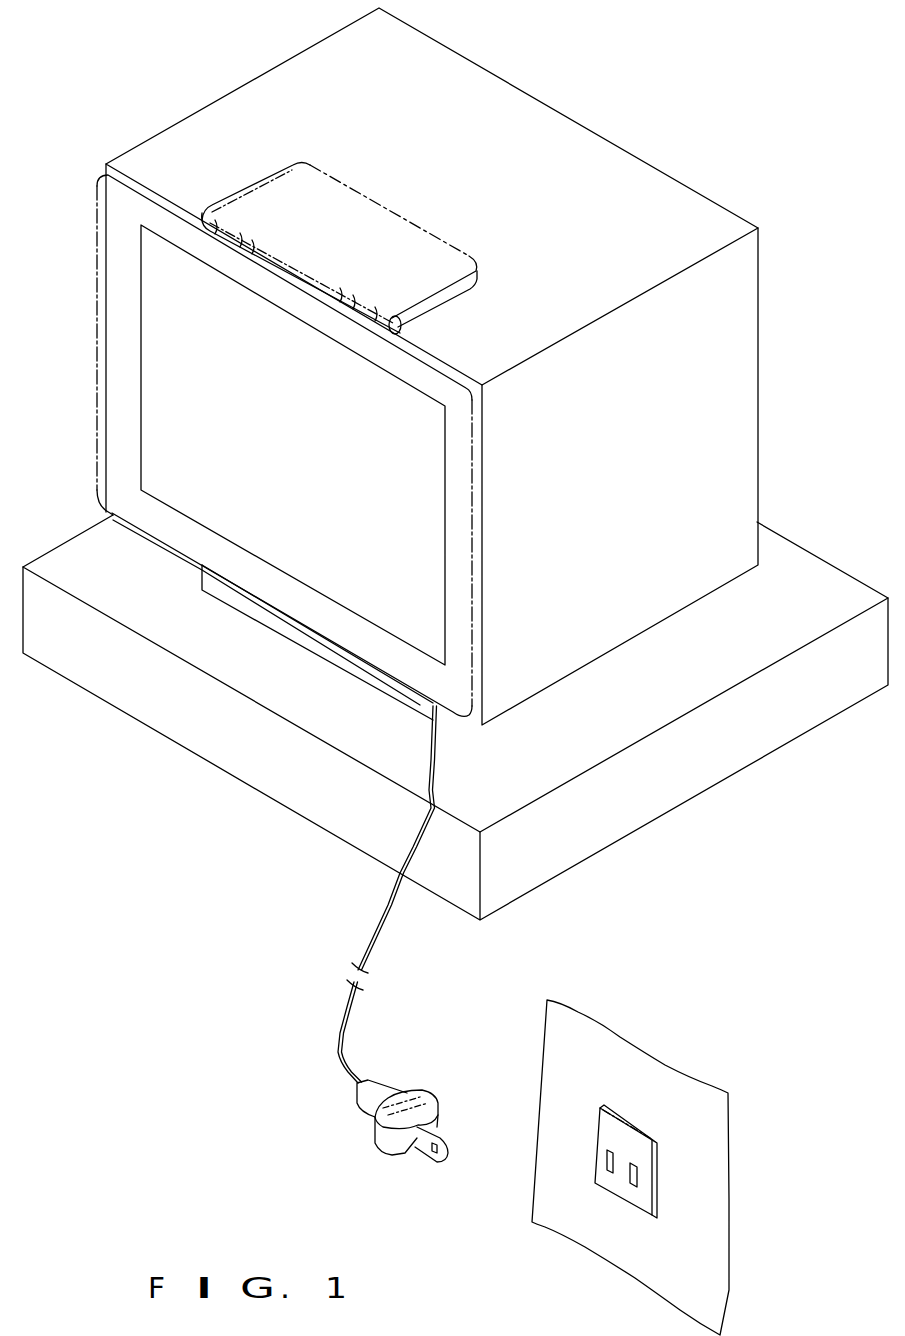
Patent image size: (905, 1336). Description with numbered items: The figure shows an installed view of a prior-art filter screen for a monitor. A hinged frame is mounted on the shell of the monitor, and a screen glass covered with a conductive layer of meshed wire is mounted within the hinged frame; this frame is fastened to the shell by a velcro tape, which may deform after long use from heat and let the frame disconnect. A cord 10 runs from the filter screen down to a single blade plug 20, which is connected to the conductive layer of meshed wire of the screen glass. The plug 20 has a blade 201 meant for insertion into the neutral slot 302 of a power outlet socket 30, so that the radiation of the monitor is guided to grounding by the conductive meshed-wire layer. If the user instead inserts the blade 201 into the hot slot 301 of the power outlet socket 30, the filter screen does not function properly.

The power cord 10 is at (378, 935).
The single blade plug 20 is at (418, 1095).
The blade 201 is at (422, 1147).
The power outlet socket 30 is at (625, 1132).
The hot slot 301 is at (610, 1166).
The neutral slot 302 is at (633, 1183).